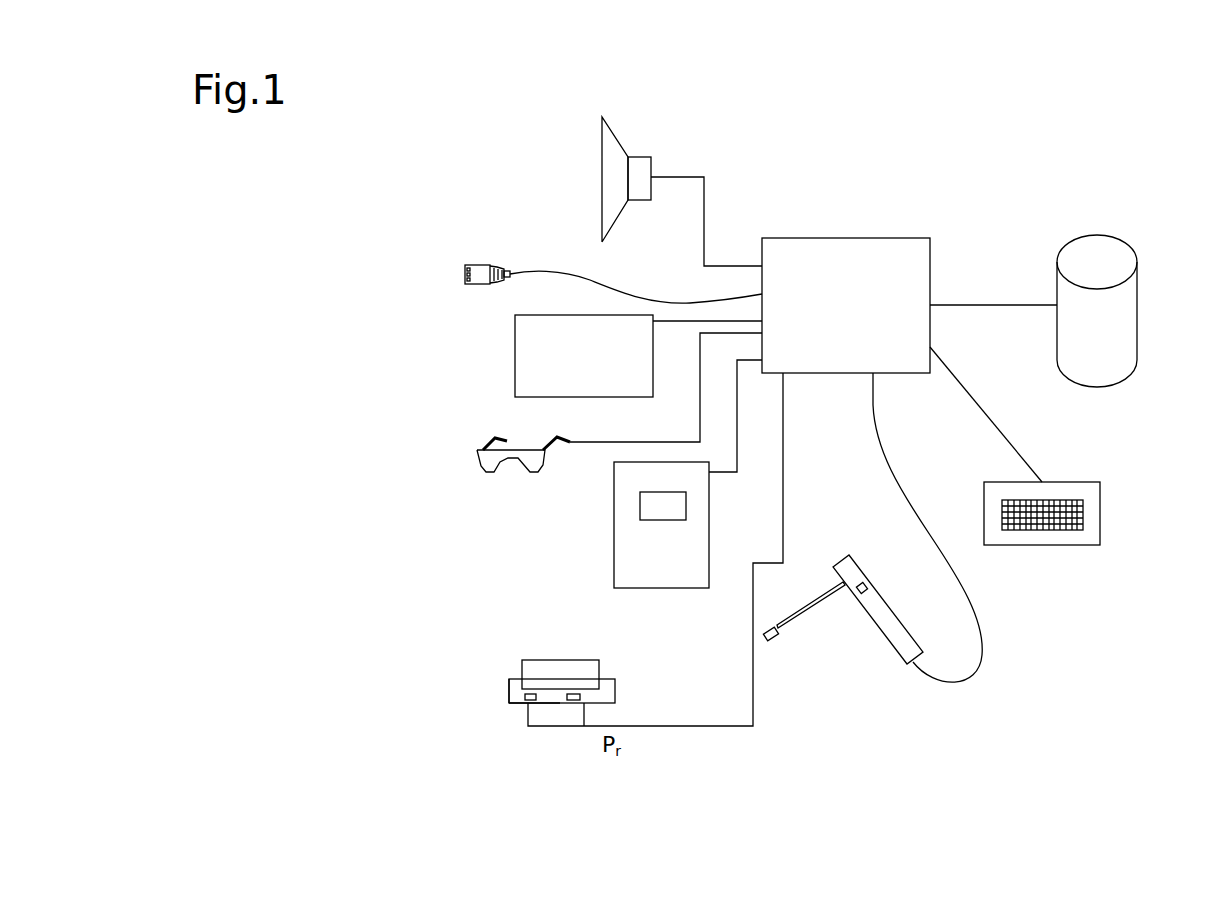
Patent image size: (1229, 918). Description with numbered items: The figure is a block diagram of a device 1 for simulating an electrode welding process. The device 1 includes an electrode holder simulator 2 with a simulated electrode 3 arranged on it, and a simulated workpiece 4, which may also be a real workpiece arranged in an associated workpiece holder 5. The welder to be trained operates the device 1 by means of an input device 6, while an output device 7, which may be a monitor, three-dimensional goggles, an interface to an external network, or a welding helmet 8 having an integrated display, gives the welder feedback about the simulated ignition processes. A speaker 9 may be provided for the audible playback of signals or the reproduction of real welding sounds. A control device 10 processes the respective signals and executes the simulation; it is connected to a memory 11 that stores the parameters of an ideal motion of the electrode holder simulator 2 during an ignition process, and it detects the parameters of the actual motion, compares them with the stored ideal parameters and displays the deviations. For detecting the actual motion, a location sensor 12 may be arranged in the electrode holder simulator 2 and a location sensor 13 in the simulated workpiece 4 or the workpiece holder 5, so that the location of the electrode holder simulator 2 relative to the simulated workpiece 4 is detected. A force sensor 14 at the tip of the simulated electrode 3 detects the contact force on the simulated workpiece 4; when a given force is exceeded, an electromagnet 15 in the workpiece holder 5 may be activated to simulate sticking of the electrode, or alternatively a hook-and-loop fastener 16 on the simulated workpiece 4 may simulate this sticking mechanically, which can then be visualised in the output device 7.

The device 1 is at (376, 503).
The electrode holder simulator 2 is at (907, 652).
The simulated electrode 3 is at (800, 617).
The simulated workpiece 4 is at (535, 667).
The workpiece holder 5 is at (516, 697).
The input device 6 is at (1092, 538).
The output device 7 is at (537, 359).
The welding helmet 8 is at (630, 556).
The speaker 9 is at (614, 171).
The control device 10 is at (848, 262).
The memory 11 is at (1090, 254).
The location sensor 12 is at (862, 594).
The location sensor 13 is at (526, 703).
The force sensor 14 is at (773, 645).
The electromagnet 15 is at (573, 703).
The hook-and-loop fastener 16 is at (530, 683).